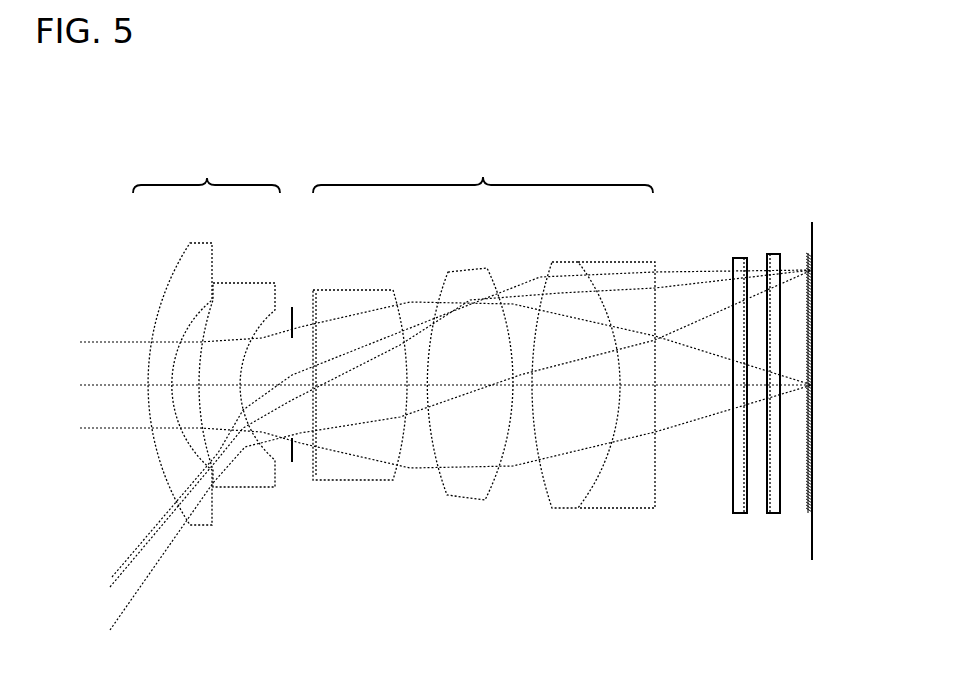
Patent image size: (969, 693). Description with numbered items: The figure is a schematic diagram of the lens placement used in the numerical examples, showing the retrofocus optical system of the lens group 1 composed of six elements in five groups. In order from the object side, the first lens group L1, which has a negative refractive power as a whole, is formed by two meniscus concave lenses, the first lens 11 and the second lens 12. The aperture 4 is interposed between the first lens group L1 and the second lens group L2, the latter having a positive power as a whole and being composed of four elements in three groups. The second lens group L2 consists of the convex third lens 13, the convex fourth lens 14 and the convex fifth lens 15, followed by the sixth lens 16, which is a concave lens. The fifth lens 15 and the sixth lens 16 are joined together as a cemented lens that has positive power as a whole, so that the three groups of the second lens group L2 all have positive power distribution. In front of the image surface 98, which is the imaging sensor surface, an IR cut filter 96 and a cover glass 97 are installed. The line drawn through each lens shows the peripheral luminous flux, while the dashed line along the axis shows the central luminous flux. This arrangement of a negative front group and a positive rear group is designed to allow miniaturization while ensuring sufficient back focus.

The lens group 1 is at (436, 523).
The first lens group L1 is at (206, 169).
The second lens group L2 is at (483, 168).
The first lens 11 is at (190, 295).
The second lens 12 is at (252, 312).
The third lens 13 is at (343, 312).
The fourth lens 14 is at (457, 312).
The fifth lens 15 is at (557, 295).
The sixth lens 16 is at (628, 295).
The aperture 4 is at (292, 462).
The IR cut filter 96 is at (733, 507).
The cover glass 97 is at (775, 502).
The image surface 98 is at (810, 483).